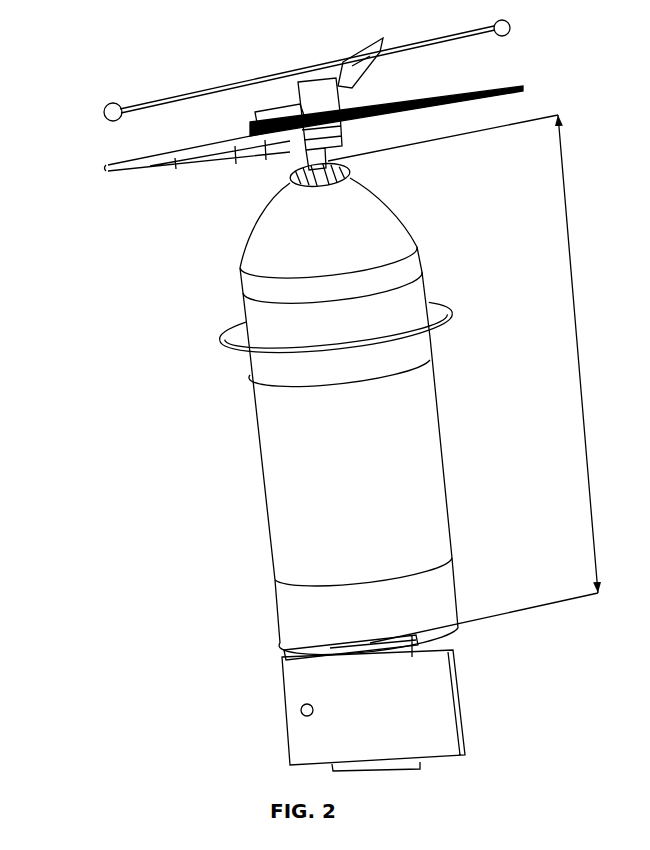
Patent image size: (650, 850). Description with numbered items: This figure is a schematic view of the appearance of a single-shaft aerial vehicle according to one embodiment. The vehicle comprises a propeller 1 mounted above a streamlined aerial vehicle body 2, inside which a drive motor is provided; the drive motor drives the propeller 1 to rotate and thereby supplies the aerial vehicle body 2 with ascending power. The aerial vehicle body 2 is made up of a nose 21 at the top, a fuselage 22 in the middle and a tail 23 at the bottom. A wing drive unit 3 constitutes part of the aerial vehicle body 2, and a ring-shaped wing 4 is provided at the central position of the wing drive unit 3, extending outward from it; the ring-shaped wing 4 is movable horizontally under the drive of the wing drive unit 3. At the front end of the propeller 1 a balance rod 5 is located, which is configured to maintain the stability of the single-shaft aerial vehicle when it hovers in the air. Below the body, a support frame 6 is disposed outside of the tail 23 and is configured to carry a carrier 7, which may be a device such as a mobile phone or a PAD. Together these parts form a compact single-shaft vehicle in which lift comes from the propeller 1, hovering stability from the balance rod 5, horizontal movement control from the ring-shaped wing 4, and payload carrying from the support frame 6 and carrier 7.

The propeller 1 is at (237, 120).
The aerial vehicle body 2 is at (472, 379).
The wing drive unit 3 is at (240, 310).
The ring-shaped wing 4 is at (457, 311).
The balance rod 5 is at (512, 30).
The support frame 6 is at (337, 650).
The carrier 7 is at (283, 697).
The nose 21 is at (237, 240).
The fuselage 22 is at (253, 498).
The tail 23 is at (269, 615).